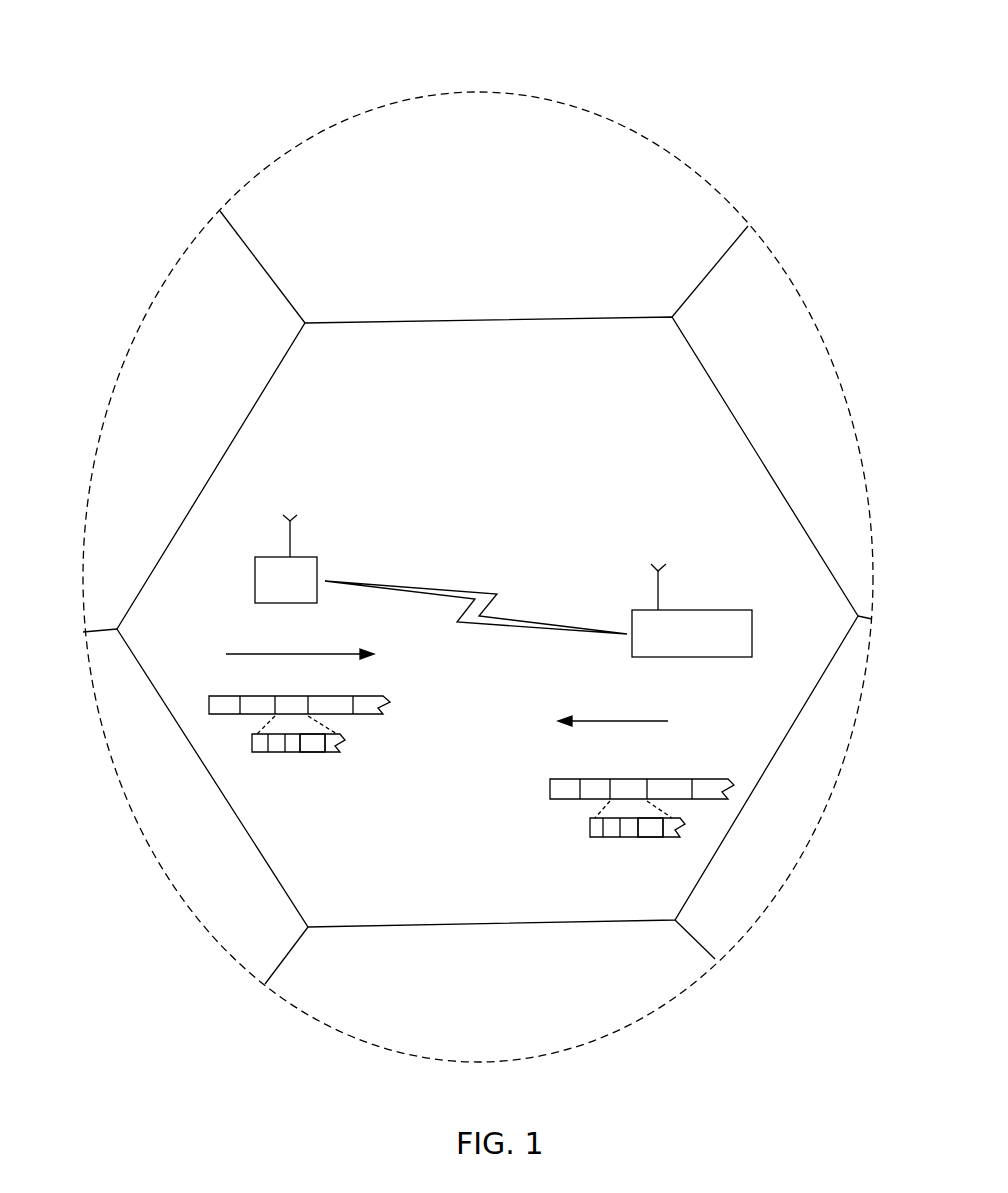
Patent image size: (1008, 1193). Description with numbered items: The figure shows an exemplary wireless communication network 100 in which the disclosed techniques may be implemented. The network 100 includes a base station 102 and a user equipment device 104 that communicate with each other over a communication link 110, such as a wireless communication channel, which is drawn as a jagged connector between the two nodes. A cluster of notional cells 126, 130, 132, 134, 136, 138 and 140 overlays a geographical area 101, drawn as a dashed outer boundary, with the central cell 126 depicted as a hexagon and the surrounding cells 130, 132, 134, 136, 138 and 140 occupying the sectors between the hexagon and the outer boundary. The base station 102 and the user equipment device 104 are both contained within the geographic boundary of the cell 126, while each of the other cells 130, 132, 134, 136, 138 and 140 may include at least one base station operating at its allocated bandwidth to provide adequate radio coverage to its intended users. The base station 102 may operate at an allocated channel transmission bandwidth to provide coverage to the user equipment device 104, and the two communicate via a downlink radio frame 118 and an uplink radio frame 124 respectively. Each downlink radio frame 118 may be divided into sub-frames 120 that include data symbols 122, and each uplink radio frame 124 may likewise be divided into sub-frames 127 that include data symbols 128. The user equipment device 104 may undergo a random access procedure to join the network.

The wireless communication network 100 is at (413, 46).
The geographical area 101 is at (628, 120).
The base station 102 is at (255, 572).
The user equipment device 104 is at (715, 611).
The communication link 110 is at (472, 585).
The downlink radio frame 118 is at (209, 706).
The sub-frame 120 is at (252, 742).
The data symbols 122 is at (310, 740).
The uplink radio frame 124 is at (698, 776).
The cell 126 is at (343, 388).
The sub-frame 127 is at (590, 830).
The data symbols 128 is at (653, 827).
The cell 130 is at (176, 282).
The cell 132 is at (316, 158).
The cell 134 is at (773, 306).
The cell 136 is at (745, 900).
The cell 138 is at (358, 1002).
The cell 140 is at (182, 870).